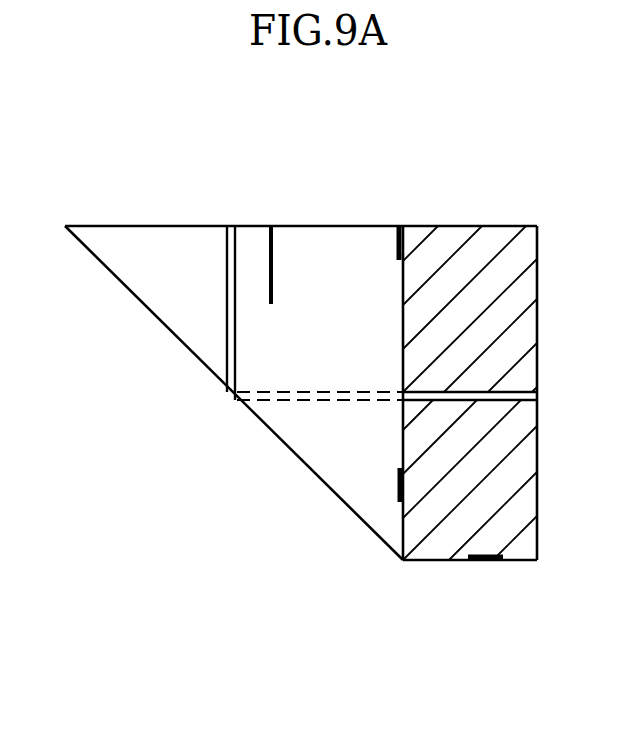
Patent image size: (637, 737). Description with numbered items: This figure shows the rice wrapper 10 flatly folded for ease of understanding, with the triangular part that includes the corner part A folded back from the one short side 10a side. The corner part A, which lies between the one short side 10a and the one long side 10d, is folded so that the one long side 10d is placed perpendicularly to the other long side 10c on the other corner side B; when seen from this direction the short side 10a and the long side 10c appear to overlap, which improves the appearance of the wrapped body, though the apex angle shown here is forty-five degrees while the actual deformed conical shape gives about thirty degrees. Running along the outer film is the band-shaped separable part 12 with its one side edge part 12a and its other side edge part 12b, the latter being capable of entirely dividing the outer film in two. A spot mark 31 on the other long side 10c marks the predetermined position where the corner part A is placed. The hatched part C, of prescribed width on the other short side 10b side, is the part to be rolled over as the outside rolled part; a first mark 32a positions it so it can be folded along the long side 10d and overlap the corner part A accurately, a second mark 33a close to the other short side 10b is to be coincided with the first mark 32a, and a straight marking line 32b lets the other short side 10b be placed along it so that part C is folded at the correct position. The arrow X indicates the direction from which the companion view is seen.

The wrapper 10 is at (350, 350).
The one short side 10a is at (147, 226).
The other short side 10b is at (538, 330).
The other long side 10c is at (465, 226).
The one long side 10d is at (403, 497).
The separable part 12 is at (175, 254).
The one side edge part 12a is at (226, 250).
The other side edge part 12b is at (236, 245).
The spot mark 31 is at (398, 240).
The first mark 32a is at (398, 487).
The marking line 32b is at (275, 270).
The second mark 33a is at (480, 562).
The direction X is at (292, 207).
The corner part A is at (347, 263).
The other corner side B is at (100, 265).
The part C is at (506, 430).